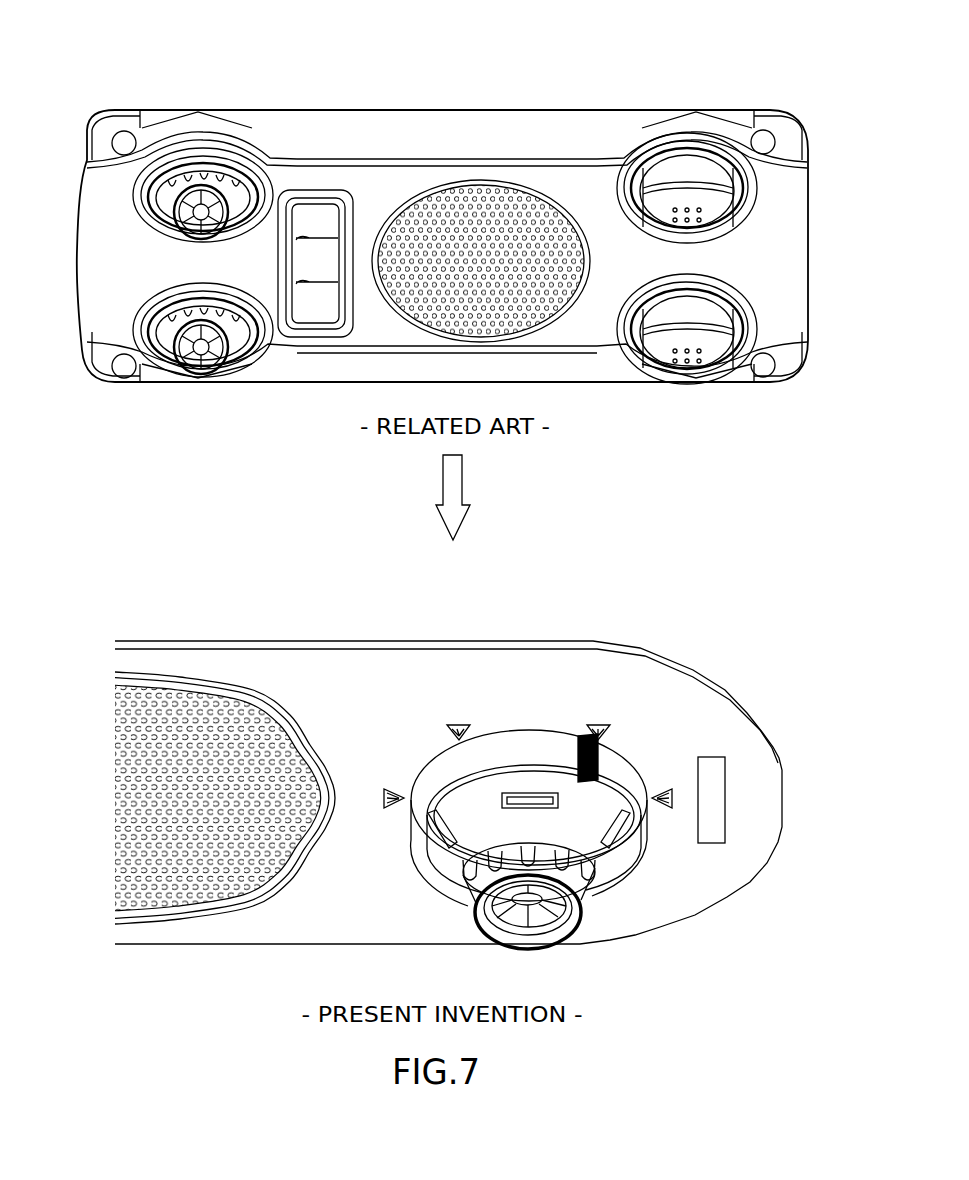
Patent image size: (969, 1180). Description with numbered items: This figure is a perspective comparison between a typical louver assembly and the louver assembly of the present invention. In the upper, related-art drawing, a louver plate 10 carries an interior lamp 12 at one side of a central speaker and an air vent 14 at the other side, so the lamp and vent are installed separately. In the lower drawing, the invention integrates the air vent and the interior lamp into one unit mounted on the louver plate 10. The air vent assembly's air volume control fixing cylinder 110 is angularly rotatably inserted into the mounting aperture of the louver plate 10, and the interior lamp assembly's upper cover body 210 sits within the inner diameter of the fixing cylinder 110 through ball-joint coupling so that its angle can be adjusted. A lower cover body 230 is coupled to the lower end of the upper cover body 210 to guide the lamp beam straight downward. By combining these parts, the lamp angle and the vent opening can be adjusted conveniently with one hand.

The louver plate 10 is at (528, 122).
The interior lamp 12 is at (232, 185).
The air vent 14 is at (695, 170).
The air volume control fixing cylinder 110 is at (571, 780).
The upper cover body 210 is at (598, 798).
The lower cover body 230 is at (585, 893).